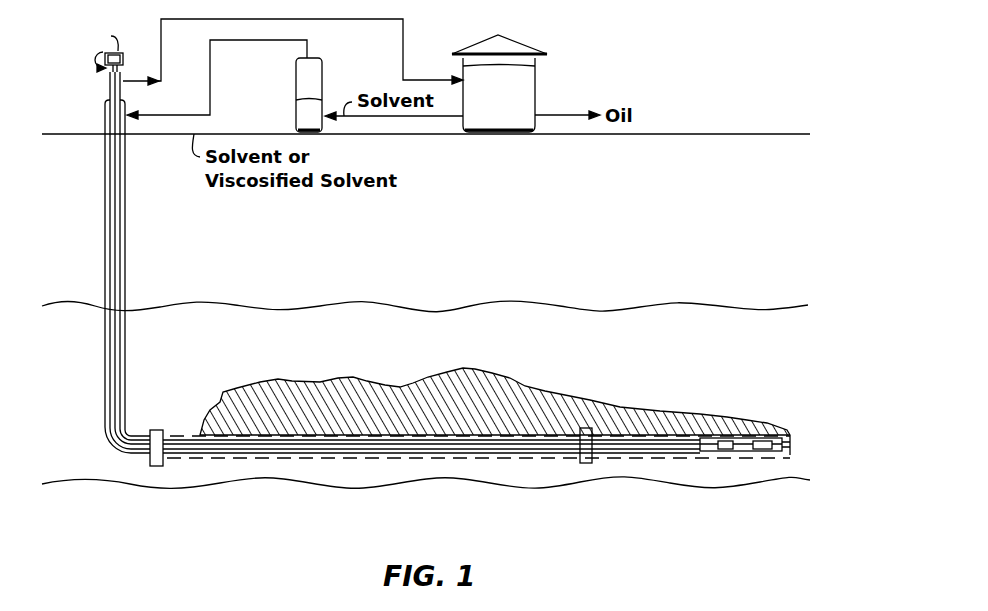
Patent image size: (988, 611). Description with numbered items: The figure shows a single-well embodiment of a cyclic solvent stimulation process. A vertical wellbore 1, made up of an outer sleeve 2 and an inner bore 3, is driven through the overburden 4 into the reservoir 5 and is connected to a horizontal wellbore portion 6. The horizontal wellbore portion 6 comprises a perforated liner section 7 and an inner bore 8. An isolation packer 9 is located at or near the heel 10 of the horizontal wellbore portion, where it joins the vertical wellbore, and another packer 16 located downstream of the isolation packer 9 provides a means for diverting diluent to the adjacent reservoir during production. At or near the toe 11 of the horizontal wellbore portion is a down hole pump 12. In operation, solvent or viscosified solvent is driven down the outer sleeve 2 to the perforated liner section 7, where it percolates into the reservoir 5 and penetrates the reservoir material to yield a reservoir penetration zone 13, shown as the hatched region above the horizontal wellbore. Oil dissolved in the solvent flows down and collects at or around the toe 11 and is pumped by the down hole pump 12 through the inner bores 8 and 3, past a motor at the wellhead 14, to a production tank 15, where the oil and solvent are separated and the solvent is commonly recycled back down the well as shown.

The vertical wellbore 1 is at (102, 270).
The outer sleeve 2 is at (105, 249).
The inner bore 3 is at (112, 362).
The overburden 4 is at (654, 233).
The reservoir 5 is at (654, 363).
The horizontal wellbore portion 6 is at (363, 470).
The perforated liner section 7 is at (257, 461).
The inner bore 8 is at (490, 452).
The isolation packer 9 is at (154, 466).
The heel 10 is at (118, 450).
The toe 11 is at (792, 441).
The down hole pump 12 is at (743, 454).
The reservoir penetration zone 13 is at (358, 378).
The wellhead 14 is at (92, 87).
The production tank 15 is at (531, 52).
The packer 16 is at (584, 465).